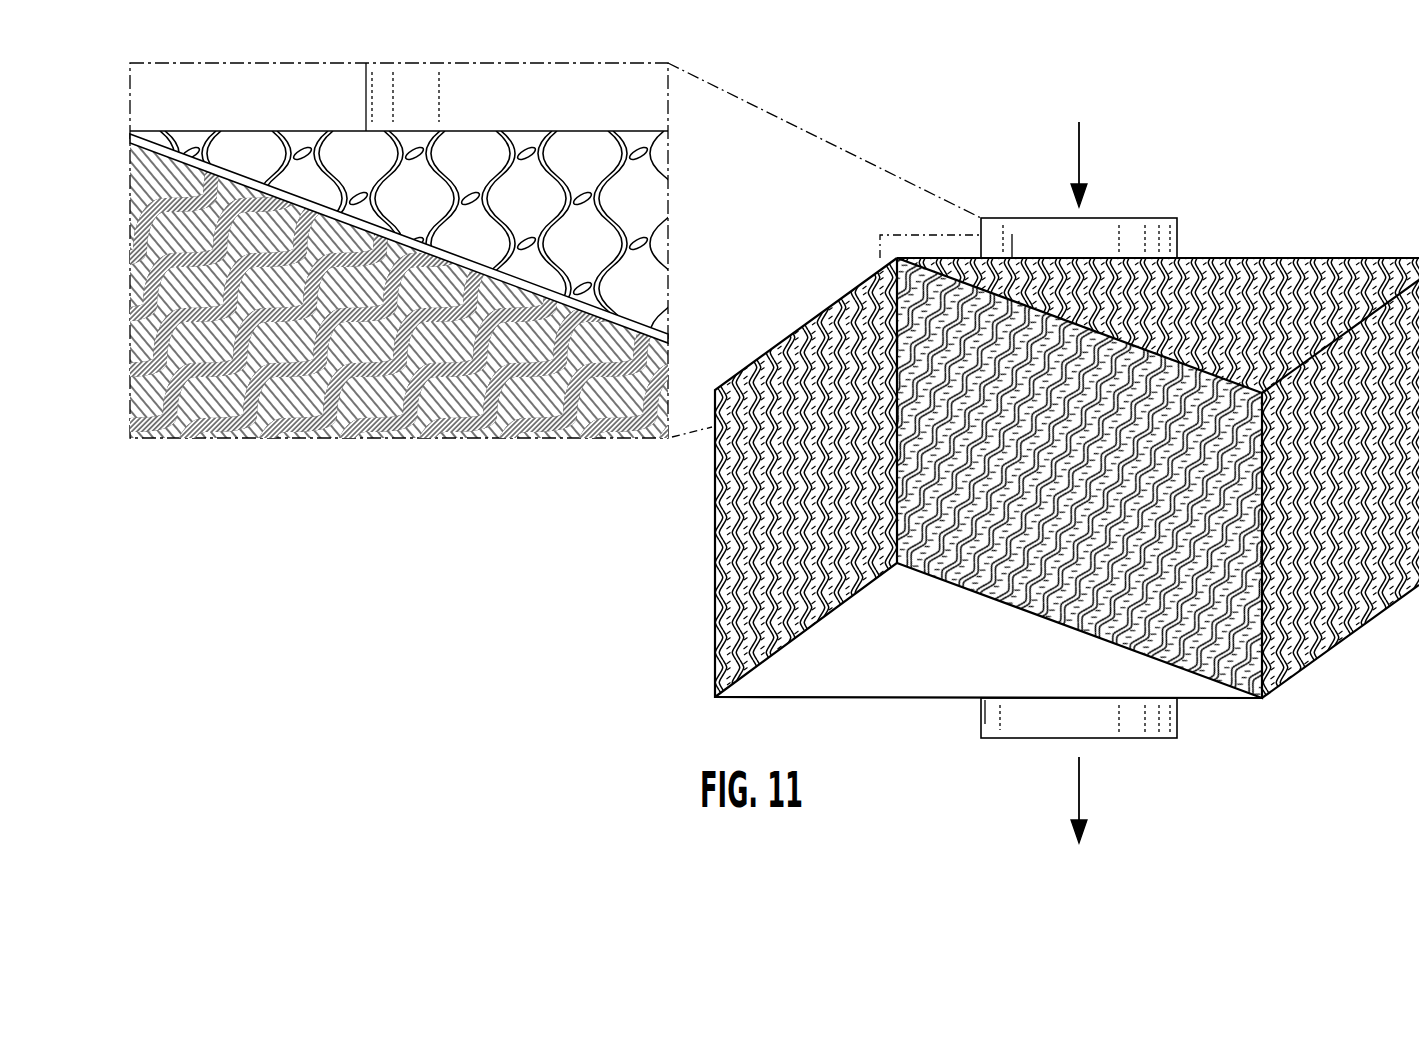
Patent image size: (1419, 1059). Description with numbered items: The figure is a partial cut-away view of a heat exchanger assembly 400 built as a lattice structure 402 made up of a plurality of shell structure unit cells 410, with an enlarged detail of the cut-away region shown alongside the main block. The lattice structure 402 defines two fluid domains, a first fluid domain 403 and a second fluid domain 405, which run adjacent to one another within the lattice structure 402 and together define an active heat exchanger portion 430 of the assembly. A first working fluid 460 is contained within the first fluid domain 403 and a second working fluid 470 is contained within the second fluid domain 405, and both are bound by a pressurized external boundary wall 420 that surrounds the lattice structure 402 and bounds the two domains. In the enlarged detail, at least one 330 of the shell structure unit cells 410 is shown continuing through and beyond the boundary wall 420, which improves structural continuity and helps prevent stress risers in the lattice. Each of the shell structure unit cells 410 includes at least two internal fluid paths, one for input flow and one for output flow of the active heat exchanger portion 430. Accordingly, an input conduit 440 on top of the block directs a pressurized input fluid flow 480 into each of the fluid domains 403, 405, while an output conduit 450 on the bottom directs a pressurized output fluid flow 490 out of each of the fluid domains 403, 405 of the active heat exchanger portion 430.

The at least one of the shell structure unit cells 330 is at (655, 224).
The heat exchanger assembly 400 is at (1070, 472).
The lattice structure 402 is at (578, 215).
The first fluid domain 403 is at (133, 196).
The second fluid domain 405 is at (575, 277).
The shell structure unit cells 410 is at (133, 318).
The pressurized external boundary wall 420 is at (150, 142).
The active heat exchanger portion 430 is at (394, 379).
The input conduit 440 is at (1093, 252).
The output conduit 450 is at (1093, 733).
The first working fluid 460 is at (278, 431).
The second working fluid 470 is at (204, 405).
The pressurized input fluid flow 480 is at (1079, 150).
The pressurized output fluid flow 490 is at (1079, 818).